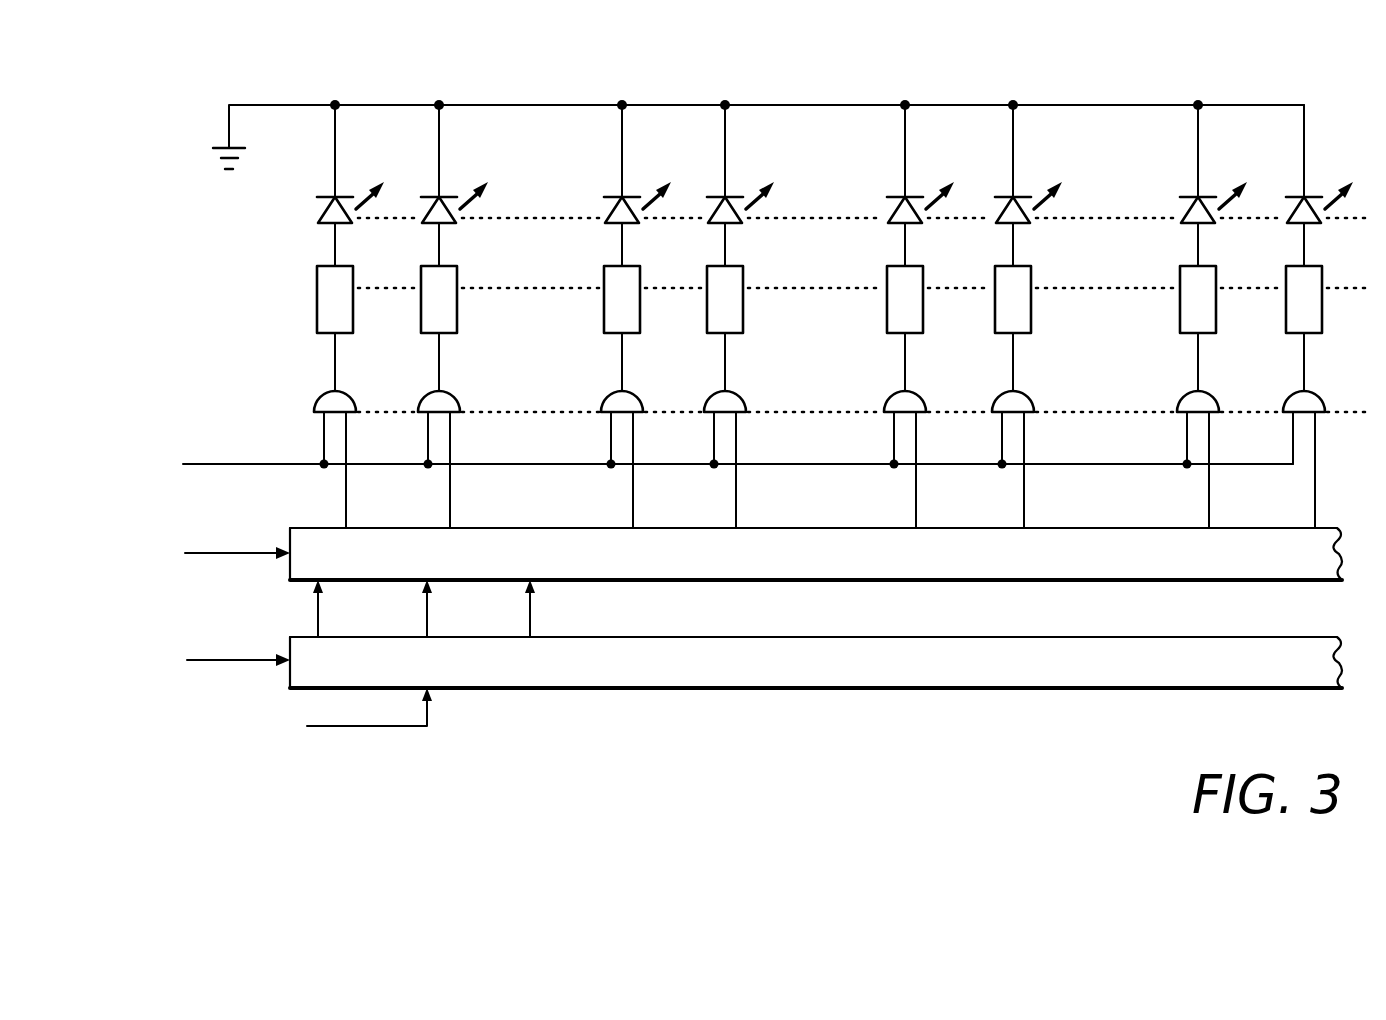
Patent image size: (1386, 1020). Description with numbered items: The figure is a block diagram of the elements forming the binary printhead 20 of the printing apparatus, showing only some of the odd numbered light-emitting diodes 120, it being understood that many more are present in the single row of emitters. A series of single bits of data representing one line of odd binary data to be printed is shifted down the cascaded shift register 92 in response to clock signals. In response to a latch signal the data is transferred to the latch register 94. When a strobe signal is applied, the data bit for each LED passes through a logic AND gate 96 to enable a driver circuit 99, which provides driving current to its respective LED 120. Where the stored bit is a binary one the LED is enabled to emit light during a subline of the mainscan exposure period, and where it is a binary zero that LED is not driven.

The printhead 20 is at (160, 318).
The light-emitting diode 120 is at (1287, 220).
The driver circuit 99 is at (1340, 326).
The logic AND gate 96 is at (1292, 392).
The latch register 94 is at (303, 528).
The cascaded shift register 92 is at (303, 637).